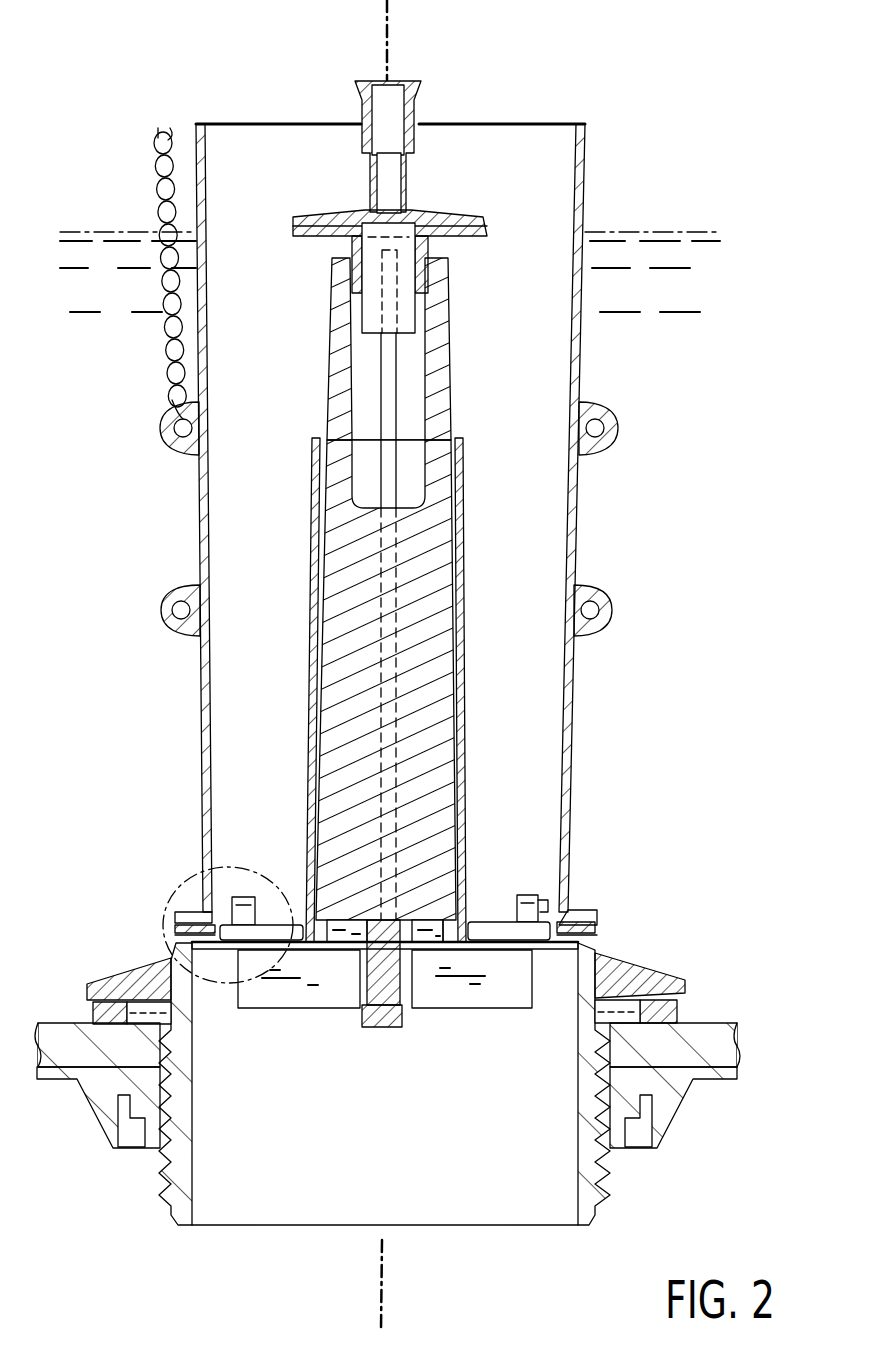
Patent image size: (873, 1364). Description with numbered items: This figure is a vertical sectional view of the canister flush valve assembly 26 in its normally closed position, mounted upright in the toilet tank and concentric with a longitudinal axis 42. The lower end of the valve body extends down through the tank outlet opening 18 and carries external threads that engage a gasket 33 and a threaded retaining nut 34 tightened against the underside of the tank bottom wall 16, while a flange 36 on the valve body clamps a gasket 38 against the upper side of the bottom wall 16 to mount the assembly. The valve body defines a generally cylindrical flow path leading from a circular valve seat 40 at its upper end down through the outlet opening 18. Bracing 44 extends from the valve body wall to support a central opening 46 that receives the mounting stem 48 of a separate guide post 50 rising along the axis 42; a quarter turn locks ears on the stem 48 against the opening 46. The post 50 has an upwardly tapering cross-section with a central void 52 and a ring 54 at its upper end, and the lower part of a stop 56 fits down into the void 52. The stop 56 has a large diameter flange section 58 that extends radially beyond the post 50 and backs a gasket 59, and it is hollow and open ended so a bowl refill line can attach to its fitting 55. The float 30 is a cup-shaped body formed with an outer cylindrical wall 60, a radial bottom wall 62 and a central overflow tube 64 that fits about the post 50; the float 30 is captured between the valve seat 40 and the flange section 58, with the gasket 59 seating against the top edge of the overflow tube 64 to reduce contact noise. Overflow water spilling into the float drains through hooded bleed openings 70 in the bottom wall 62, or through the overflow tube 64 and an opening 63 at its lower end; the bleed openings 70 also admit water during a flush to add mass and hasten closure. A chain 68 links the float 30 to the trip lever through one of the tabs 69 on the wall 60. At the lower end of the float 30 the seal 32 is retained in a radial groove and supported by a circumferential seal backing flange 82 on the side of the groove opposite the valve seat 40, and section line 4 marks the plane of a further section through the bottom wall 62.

The section line 4- 4 is at (190, 897).
The tank bottom wall 16 is at (714, 1044).
The tank outlet opening 18 is at (425, 1084).
The flush valve assembly 26 is at (583, 89).
The float 30 is at (580, 716).
The seal 32 is at (592, 921).
The gasket 33 is at (672, 1115).
The threaded retaining nut 34 is at (617, 1145).
The flange 36 is at (100, 985).
The gasket 38 is at (688, 1010).
The valve seat 40 is at (600, 936).
The longitudinal axis 42 is at (387, 22).
The bracing 44 is at (509, 996).
The central opening 46 is at (405, 1010).
The mounting stem 48 is at (384, 1020).
The guide post 50 is at (436, 746).
The central void 52 is at (418, 368).
The ring 54 is at (344, 248).
The fitting 55 is at (410, 80).
The stop 56 is at (430, 312).
The flange section 58 is at (416, 223).
The gasket 59 is at (470, 236).
The outer longitudinal cylindrical wall 60 is at (417, 524).
The radial bottom wall 62 is at (503, 935).
The opening 63 is at (449, 950).
The overflow tube 64 is at (470, 660).
The chain 68 is at (163, 384).
The tabs 69 is at (170, 453).
The hooded bleed openings 70 is at (252, 895).
The seal backing flange 82 is at (545, 903).